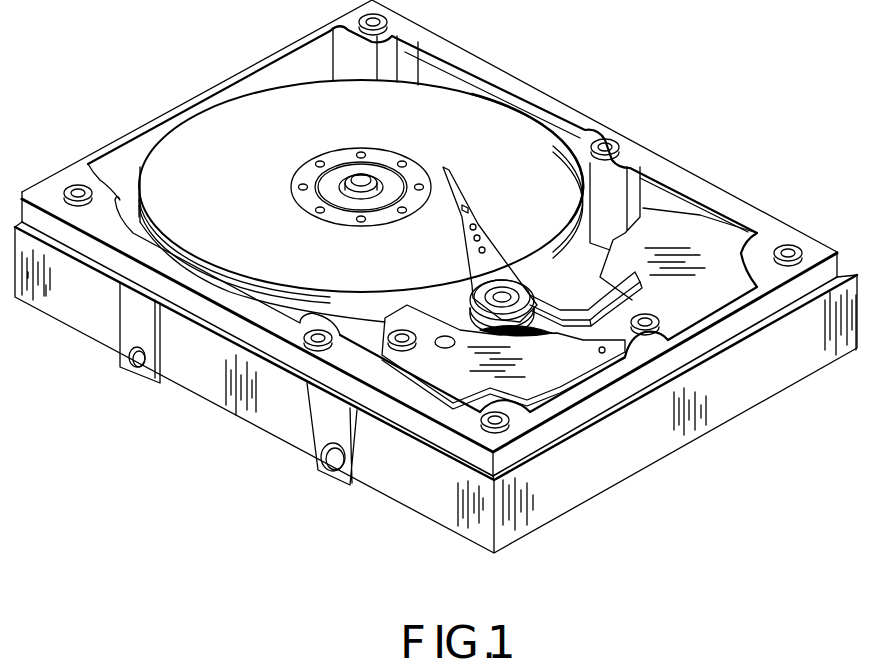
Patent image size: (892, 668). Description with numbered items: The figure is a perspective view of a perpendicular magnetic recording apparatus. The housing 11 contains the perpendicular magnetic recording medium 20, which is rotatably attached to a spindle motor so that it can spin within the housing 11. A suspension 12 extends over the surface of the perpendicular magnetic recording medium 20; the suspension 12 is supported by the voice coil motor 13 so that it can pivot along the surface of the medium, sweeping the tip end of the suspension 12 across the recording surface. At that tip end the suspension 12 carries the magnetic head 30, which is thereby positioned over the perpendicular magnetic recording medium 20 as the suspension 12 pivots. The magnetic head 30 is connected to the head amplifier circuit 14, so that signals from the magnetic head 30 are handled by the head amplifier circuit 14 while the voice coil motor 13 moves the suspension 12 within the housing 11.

The housing 11 is at (745, 387).
The suspension 12 is at (460, 215).
The voice coil motor 13 is at (515, 330).
The head amplifier circuit 14 is at (710, 262).
The perpendicular magnetic recording medium 20 is at (527, 147).
The magnetic head 30 is at (447, 175).